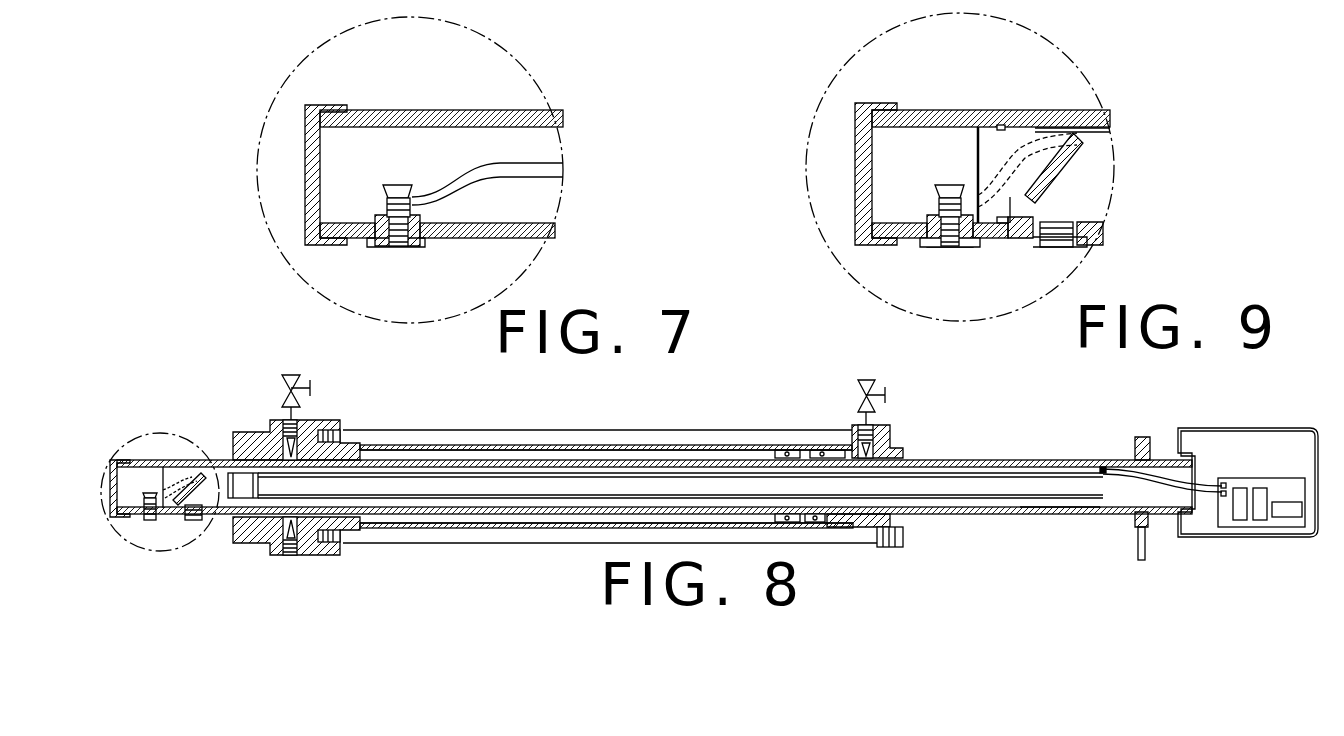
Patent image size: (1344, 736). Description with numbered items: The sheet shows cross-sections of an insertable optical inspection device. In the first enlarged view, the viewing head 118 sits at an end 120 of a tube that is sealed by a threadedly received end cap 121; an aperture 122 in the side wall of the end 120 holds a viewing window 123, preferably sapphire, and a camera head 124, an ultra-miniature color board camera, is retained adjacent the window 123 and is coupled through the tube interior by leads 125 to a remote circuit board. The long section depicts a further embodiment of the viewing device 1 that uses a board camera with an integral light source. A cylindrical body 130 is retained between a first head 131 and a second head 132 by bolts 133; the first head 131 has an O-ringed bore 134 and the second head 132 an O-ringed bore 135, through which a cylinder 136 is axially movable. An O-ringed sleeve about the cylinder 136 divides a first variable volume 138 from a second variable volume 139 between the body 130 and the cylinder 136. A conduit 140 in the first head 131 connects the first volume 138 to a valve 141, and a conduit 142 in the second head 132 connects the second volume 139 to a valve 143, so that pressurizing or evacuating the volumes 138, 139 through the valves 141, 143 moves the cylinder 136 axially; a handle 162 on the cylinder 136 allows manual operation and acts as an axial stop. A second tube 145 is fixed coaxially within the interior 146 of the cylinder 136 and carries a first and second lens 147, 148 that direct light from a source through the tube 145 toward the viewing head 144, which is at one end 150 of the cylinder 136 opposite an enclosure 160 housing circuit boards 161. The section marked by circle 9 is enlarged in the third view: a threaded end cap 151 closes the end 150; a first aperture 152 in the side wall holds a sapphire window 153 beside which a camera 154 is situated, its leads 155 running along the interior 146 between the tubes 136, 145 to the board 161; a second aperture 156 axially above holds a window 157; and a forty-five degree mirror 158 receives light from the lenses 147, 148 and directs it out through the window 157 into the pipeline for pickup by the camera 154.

In FIG. 8, the viewing device 1 is at (1186, 554).
In FIG. 8, the circle 9— 9 is at (112, 453).
In FIG. 7, the viewing head 118 is at (270, 70).
In FIG. 7, the end 120 is at (395, 110).
In FIG. 7, the end cap 121 is at (312, 175).
In FIG. 7, the aperture 122 is at (362, 238).
In FIG. 7, the viewing window 123 is at (420, 240).
In FIG. 7, the camera head 124 is at (398, 185).
In FIG. 7, the leads 125 is at (510, 170).
In FIG. 8, the cylindrical body 130 is at (462, 445).
In FIG. 8, the first head 131 is at (905, 522).
In FIG. 8, the second head 132 is at (233, 543).
In FIG. 8, the bolts 133 is at (485, 543).
In FIG. 8, the O-ringed bore 134 is at (890, 430).
In FIG. 8, the O-ringed bore 135 is at (330, 430).
In FIG. 8, the cylinder 136 is at (965, 456).
In FIG. 8, the first variable volume 138 is at (830, 522).
In FIG. 8, the second variable volume 139 is at (728, 455).
In FIG. 8, the conduit 140 is at (860, 425).
In FIG. 8, the valve 141 is at (870, 378).
In FIG. 8, the conduit 142 is at (287, 420).
In FIG. 8, the valve 143 is at (293, 373).
In FIG. 9, the viewing head 144 is at (1118, 90).
In FIG. 8, the viewing head 144 is at (140, 402).
In FIG. 8, the second cylinder or tube 145 is at (1055, 506).
In FIG. 8, the interior 146 is at (395, 506).
In FIG. 8, the first lens 147 is at (230, 440).
In FIG. 8, the second lens 148 is at (257, 483).
In FIG. 9, the end 150 is at (923, 110).
In FIG. 9, the end cap 151 is at (856, 178).
In FIG. 9, the first aperture 152 is at (912, 236).
In FIG. 9, the window 153 is at (930, 238).
In FIG. 9, the camera 154 is at (950, 185).
In FIG. 9, the leads 155 is at (1013, 150).
In FIG. 8, the leads 155 is at (1060, 468).
In FIG. 9, the second aperture 156 is at (1015, 231).
In FIG. 9, the window 157 is at (1085, 240).
In FIG. 9, the angled mirror 158 is at (1068, 162).
In FIG. 8, the enclosure 160 is at (1258, 428).
In FIG. 8, the circuit boards 161 is at (1295, 494).
In FIG. 8, the handle 162 is at (1143, 437).